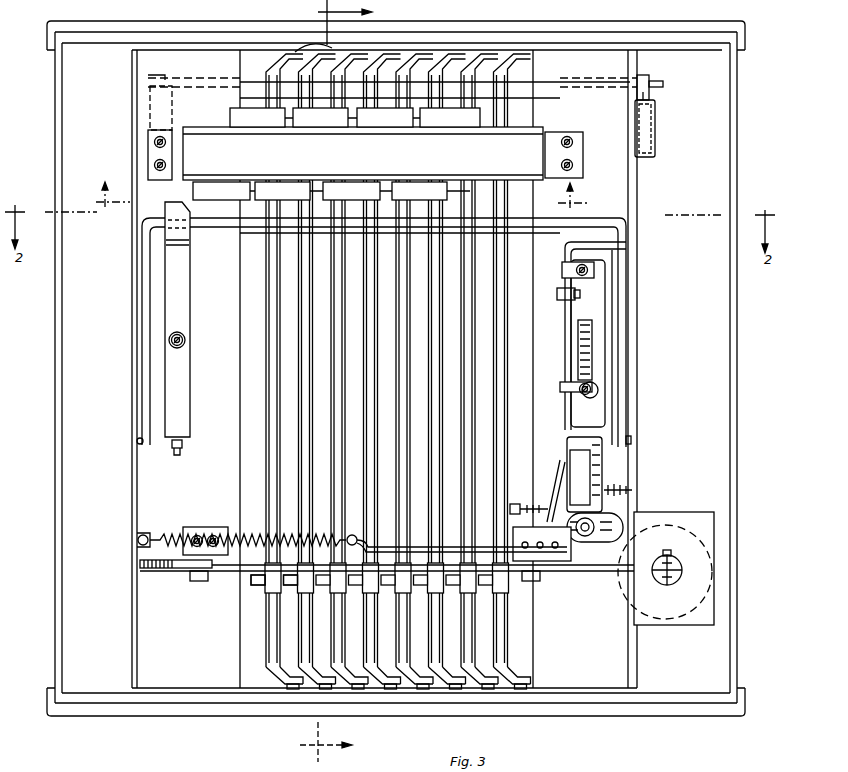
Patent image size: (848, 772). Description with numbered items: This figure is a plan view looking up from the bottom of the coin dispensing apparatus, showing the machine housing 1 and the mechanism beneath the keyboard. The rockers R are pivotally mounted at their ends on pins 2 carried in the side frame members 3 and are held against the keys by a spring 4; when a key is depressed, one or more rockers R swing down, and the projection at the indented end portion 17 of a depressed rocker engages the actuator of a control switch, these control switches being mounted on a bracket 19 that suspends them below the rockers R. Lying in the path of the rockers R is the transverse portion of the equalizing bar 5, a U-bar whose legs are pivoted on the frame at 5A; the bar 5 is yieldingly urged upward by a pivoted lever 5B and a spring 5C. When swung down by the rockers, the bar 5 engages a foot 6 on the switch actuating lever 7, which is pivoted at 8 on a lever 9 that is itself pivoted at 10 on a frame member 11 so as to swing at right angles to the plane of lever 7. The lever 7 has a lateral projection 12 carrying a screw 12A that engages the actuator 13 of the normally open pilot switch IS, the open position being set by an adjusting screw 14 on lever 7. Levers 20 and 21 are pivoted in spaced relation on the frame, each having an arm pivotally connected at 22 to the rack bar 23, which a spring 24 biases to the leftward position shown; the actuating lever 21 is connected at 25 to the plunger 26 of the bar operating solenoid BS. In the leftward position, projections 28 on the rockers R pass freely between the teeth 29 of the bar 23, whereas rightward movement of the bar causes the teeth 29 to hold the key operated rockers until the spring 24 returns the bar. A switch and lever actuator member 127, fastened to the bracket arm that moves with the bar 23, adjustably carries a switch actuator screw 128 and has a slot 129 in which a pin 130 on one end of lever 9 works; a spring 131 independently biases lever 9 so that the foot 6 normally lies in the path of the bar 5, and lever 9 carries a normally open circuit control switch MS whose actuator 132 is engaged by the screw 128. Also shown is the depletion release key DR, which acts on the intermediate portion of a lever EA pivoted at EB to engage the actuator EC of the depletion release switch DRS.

The cabinet housing 1 is at (55, 445).
The pins 2 is at (300, 47).
The side frame members 3 is at (266, 52).
The spring 4 is at (343, 381).
The equalizing bar 5 is at (200, 228).
The pivot of equalizing bar legs 5A is at (137, 441).
The pivoted lever 5B is at (188, 367).
The spring 5C is at (188, 340).
The foot 6 is at (612, 245).
The switch actuating lever 7 is at (565, 332).
The pivot of lever 7 8 is at (557, 294).
The lever 9 is at (597, 312).
The pivot of lever 9 10 is at (598, 392).
The frame member 11 is at (618, 380).
The lateral projection 12 is at (560, 388).
The screw 12A is at (580, 398).
The actuator 13 is at (580, 362).
The adjusting screw 14 is at (570, 270).
The indented end portion 17 is at (383, 194).
The bracket 19 is at (478, 161).
The lever 20 is at (178, 570).
The actuating lever 21 is at (612, 568).
The pivotal connection 22 is at (204, 581).
The rack bar 23 is at (506, 565).
The spring 24 is at (262, 535).
The pivotal connection 25 is at (672, 556).
The plunger 26 is at (674, 580).
The projections 28 is at (260, 590).
The teeth 29 is at (295, 588).
The switch and lever actuator member 127 is at (572, 552).
The switch actuator screw 128 is at (518, 502).
The slot 129 is at (605, 522).
The pin 130 is at (592, 530).
The spring 131 is at (622, 484).
The actuator 132 is at (552, 492).
The rockers R is at (268, 380).
The depletion release key DR is at (425, 130).
The depletion release switch DRS is at (655, 135).
The lever EA is at (650, 84).
The pivot of lever EA EB is at (165, 73).
The actuator EC is at (650, 94).
The pilot switch IS is at (590, 340).
The circuit control switch MS is at (575, 462).
The bar operating solenoid BS is at (676, 612).